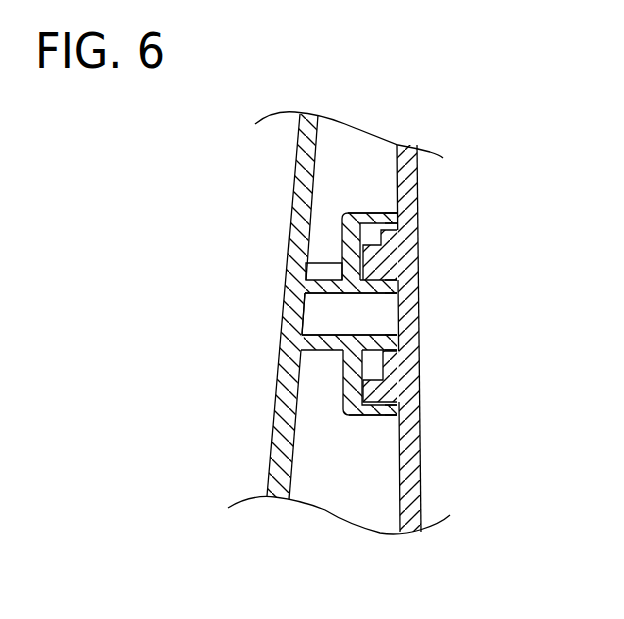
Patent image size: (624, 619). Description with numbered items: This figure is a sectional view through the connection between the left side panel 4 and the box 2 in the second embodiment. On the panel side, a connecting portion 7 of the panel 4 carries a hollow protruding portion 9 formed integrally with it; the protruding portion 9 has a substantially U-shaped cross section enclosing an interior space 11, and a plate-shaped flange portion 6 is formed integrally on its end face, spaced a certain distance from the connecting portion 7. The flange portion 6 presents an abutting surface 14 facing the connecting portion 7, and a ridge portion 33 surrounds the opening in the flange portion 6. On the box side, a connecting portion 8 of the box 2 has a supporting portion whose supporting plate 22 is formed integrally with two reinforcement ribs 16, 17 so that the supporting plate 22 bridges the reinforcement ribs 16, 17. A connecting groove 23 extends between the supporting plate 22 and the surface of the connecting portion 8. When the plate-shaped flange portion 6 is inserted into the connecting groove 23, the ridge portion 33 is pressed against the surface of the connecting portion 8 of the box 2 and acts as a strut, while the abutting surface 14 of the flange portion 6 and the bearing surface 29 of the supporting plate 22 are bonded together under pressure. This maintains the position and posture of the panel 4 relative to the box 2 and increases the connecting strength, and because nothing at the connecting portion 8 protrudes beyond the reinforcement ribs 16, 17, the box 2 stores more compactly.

The box 2 is at (418, 180).
The left side panel 4 is at (302, 167).
The plate-shaped flange portion 6 is at (389, 248).
The connecting portion 7 is at (301, 404).
The connecting portion 8 is at (391, 423).
The hollow protruding portion 9 is at (343, 360).
The interior space 11 is at (325, 318).
The abutting surface 14 is at (350, 264).
The reinforcement rib 16 is at (374, 212).
The reinforcement rib 17 is at (373, 407).
The supporting plate 22 is at (350, 241).
The connecting groove 23 is at (393, 222).
The bearing surface 29 is at (376, 358).
The ridge portion 33 is at (384, 283).